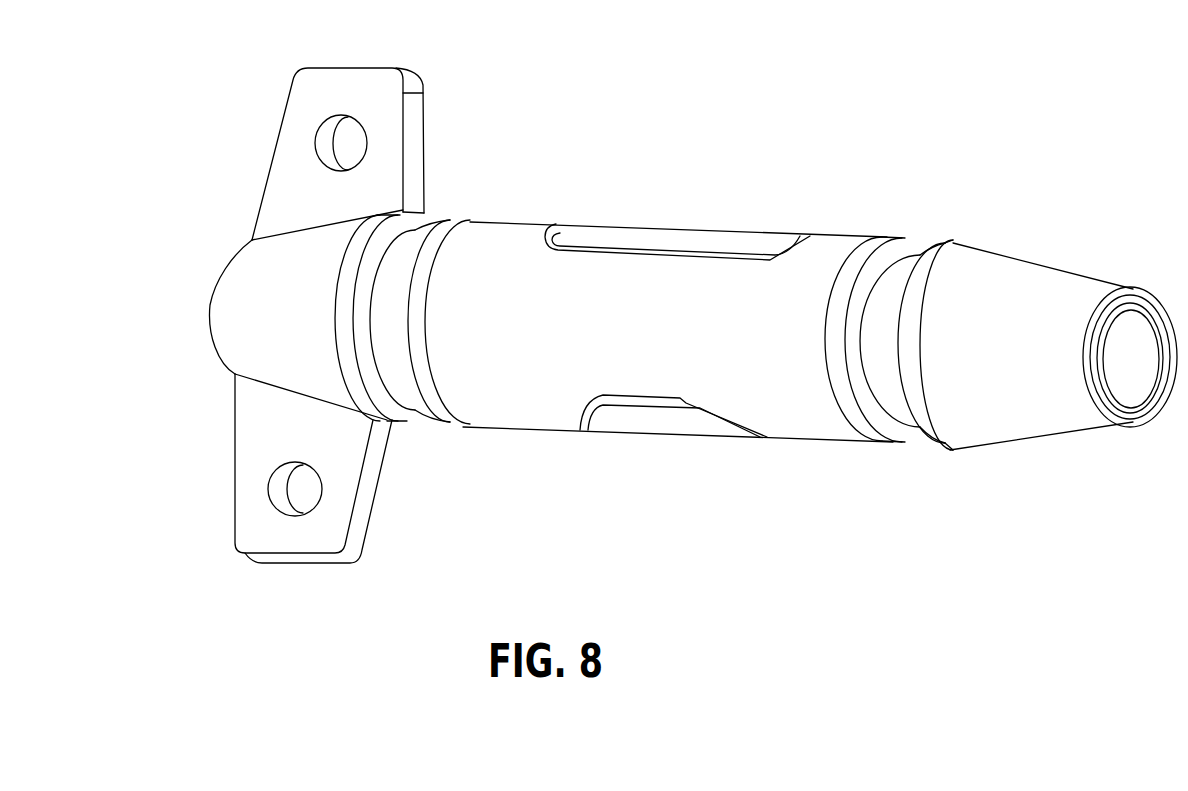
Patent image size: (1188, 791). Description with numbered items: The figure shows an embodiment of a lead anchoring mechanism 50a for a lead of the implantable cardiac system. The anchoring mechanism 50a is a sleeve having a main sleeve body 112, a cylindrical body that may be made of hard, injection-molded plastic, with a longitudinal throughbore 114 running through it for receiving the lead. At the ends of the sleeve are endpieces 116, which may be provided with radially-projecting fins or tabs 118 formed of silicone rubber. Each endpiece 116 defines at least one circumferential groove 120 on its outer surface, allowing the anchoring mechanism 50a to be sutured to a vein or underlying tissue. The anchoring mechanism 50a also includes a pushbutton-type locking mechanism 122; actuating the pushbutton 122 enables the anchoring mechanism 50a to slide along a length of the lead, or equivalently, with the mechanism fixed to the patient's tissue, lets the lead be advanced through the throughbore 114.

The anchoring mechanism 50a is at (672, 160).
The main sleeve body 112 is at (770, 437).
The longitudinal throughbore 114 is at (1125, 390).
The endpiece 116 is at (253, 352).
The radially-projecting fin or tab 118 is at (320, 68).
The circumferential groove 120 is at (432, 437).
The pushbutton-type locking mechanism 122 is at (692, 228).